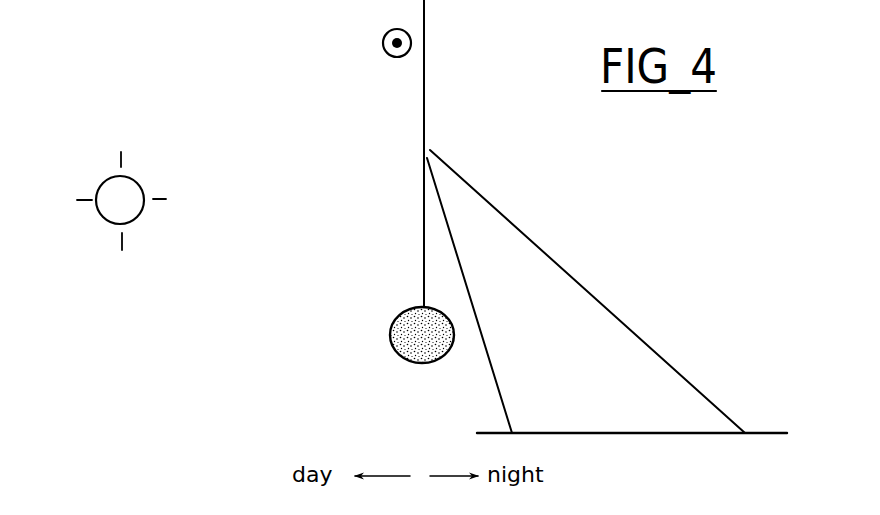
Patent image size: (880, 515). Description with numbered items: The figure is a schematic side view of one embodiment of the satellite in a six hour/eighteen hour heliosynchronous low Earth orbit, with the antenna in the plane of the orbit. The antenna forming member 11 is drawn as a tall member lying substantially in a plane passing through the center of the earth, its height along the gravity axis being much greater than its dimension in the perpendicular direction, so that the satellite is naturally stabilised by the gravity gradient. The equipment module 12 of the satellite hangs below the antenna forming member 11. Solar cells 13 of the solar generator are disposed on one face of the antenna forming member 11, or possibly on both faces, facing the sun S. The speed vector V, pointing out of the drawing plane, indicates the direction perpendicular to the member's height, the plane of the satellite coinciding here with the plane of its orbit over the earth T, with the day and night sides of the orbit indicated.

The antenna forming member 11 is at (445, 95).
The equipment module 12 is at (384, 353).
The solar cells 13 is at (410, 115).
The sun S is at (86, 218).
The ground / terrain T is at (774, 414).
The speed vector V is at (385, 43).